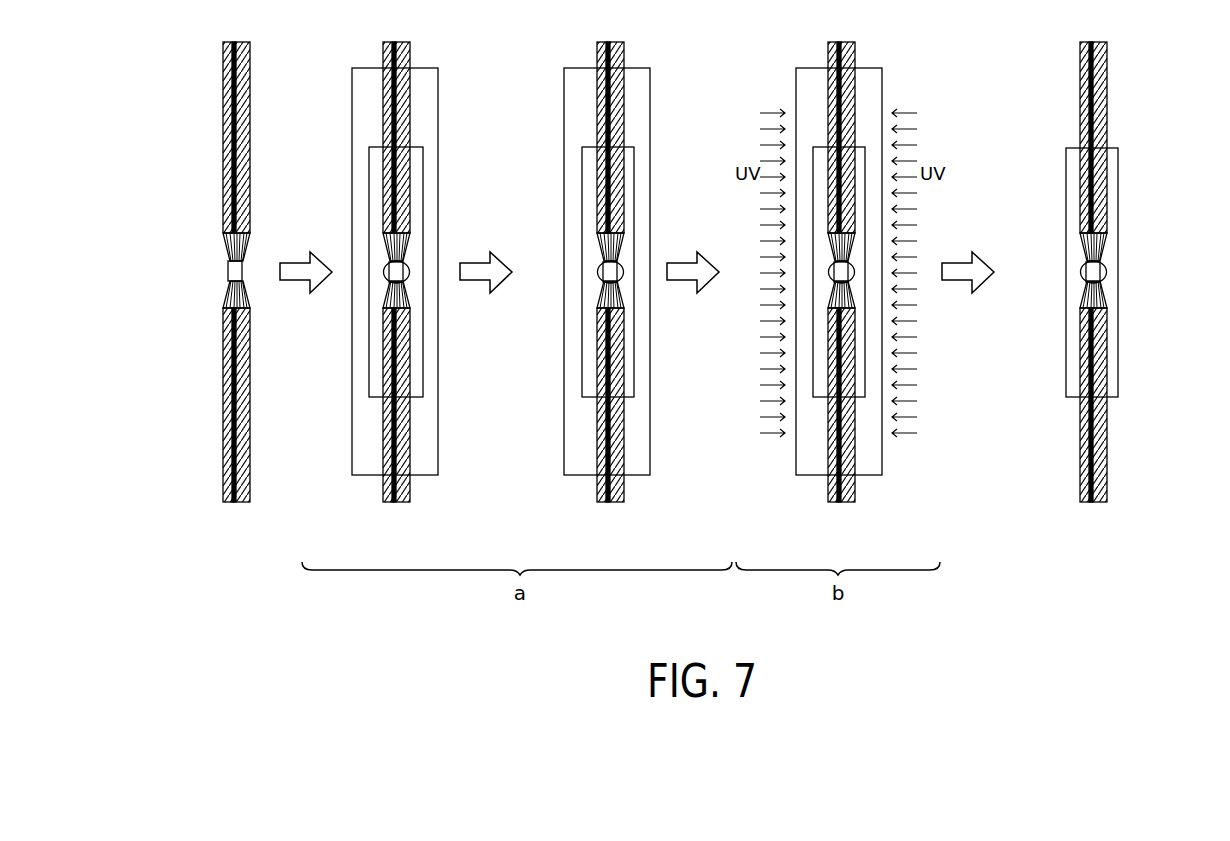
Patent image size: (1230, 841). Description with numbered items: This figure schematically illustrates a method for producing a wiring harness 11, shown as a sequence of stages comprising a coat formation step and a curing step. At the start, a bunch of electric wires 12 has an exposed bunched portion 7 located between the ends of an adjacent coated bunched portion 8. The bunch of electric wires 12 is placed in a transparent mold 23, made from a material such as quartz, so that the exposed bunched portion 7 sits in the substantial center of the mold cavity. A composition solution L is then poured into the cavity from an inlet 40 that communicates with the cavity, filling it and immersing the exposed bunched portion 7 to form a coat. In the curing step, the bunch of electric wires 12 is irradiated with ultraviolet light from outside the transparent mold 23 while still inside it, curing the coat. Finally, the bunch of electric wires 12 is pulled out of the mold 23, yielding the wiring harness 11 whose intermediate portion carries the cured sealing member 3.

The bunch of electric wires 12 is at (251, 98).
The coated bunched portion 8 is at (222, 183).
The exposed bunched portion 7 is at (243, 238).
The transparent mold 23 is at (438, 70).
The inlet 40 is at (617, 262).
The composition solution L is at (628, 318).
The sealing member 3 is at (1112, 183).
The wiring harness 11 is at (1119, 300).